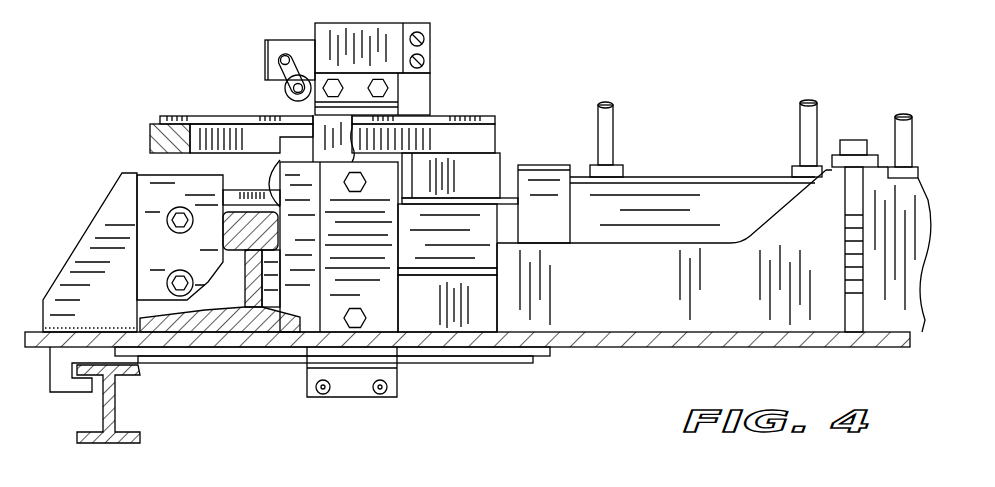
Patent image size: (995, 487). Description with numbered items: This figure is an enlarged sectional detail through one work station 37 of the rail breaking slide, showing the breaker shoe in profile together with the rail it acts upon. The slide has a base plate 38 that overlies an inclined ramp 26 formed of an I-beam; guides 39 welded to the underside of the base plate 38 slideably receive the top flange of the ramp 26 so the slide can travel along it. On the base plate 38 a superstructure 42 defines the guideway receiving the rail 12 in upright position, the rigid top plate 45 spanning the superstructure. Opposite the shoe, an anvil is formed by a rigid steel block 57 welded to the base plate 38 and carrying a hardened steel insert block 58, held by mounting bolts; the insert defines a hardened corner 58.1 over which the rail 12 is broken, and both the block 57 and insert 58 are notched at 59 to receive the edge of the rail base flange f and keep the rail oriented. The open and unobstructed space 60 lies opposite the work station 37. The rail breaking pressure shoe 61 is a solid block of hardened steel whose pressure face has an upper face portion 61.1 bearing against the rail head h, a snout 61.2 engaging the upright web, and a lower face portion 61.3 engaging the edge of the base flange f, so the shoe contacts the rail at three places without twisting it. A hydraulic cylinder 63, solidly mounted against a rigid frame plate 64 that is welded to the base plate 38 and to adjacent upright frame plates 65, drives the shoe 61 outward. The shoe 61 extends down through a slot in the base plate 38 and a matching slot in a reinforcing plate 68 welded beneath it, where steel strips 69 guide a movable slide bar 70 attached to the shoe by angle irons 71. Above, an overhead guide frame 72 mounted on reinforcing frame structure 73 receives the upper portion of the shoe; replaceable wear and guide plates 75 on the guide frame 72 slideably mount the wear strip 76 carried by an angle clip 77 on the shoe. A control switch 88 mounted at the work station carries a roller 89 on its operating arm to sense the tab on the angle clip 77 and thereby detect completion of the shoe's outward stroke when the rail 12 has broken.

The work station 37 is at (84, 130).
The control switch 88 is at (383, 28).
The angle clip 77 is at (397, 92).
The roller 89 is at (300, 78).
The wear and guide plates 75 is at (463, 116).
The overhead guide frame 72 is at (158, 128).
The top plate 45 is at (243, 190).
The hardened steel insert block 58 is at (197, 183).
The open space 60 is at (190, 258).
The anvil block 57 is at (97, 236).
The superstructure 42 is at (122, 175).
The notch 59 is at (213, 307).
The rail head h is at (240, 230).
The hardened corner 58.1 is at (187, 300).
The rail breaking pressure shoe 61 is at (303, 278).
The upper face portion 61.1 is at (281, 158).
The snout 61.2 is at (235, 297).
The lower face portion 61.3 is at (292, 325).
The rail 12 is at (260, 318).
The base flange f is at (268, 348).
The reinforcing frame structure 73 is at (483, 175).
The wear strip 76 is at (398, 113).
The hydraulic cylinder 63 is at (660, 198).
The upright frame plate 65 is at (760, 318).
The rigid frame plate 64 is at (855, 330).
The base plate 38 is at (680, 347).
The reinforcing plate 68 is at (495, 352).
The steel strips 69 is at (443, 360).
The guide 39 is at (50, 368).
The inclined ramp 26 is at (100, 410).
The slide bar 70 is at (360, 367).
The angle irons 71 is at (368, 400).